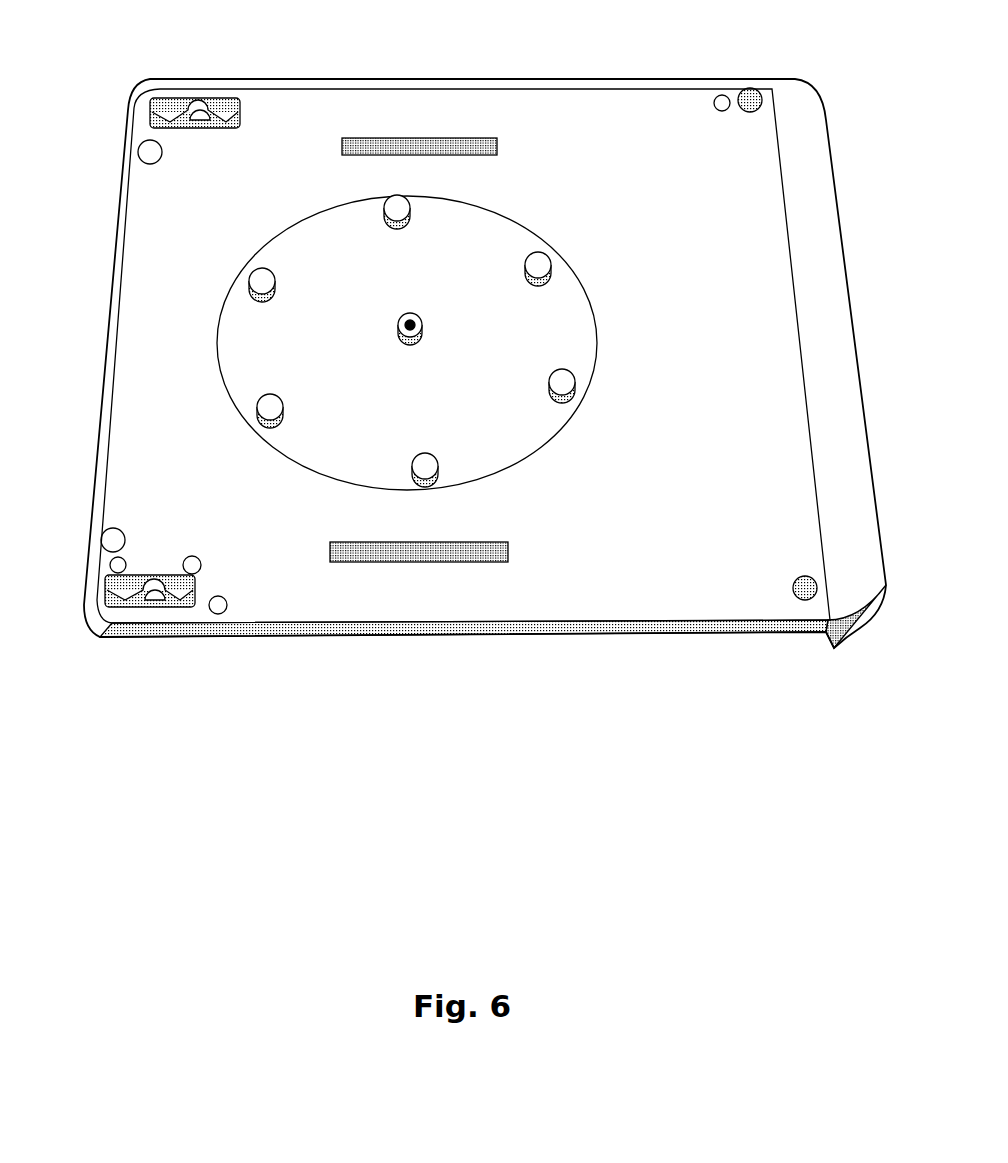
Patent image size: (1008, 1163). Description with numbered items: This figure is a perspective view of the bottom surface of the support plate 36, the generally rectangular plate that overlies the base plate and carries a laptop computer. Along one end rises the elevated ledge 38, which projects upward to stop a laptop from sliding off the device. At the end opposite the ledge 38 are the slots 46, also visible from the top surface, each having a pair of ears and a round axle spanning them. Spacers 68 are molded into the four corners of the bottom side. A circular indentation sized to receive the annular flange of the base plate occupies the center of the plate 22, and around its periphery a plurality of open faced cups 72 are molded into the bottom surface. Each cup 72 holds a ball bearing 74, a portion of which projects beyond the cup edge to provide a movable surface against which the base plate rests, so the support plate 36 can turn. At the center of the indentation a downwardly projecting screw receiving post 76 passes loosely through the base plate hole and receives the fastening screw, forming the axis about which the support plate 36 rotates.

The turntable plate 22 is at (260, 437).
The support plate 36 is at (485, 612).
The elevated ledge 38 is at (745, 268).
The slot 46 is at (203, 102).
The spacers 68 is at (136, 155).
The open faced cups 72 is at (398, 208).
The ball bearing 74 is at (397, 208).
The screw receiving post 76 is at (405, 338).